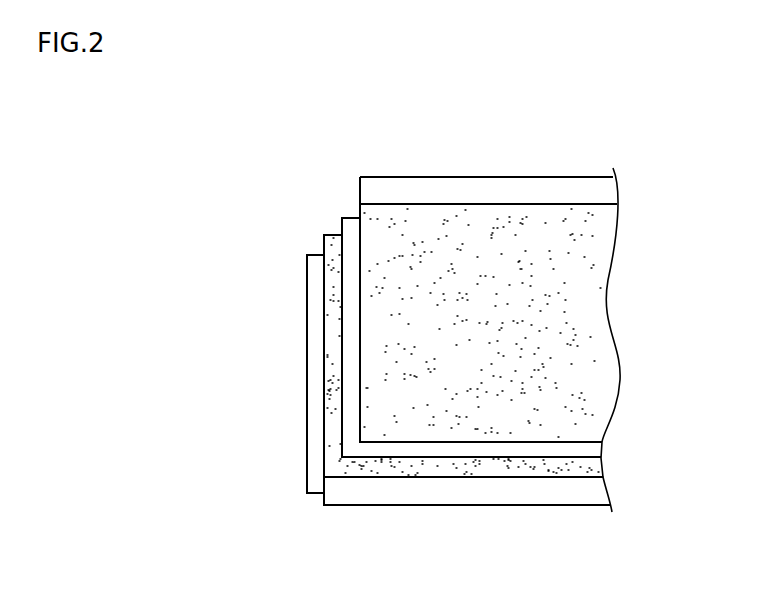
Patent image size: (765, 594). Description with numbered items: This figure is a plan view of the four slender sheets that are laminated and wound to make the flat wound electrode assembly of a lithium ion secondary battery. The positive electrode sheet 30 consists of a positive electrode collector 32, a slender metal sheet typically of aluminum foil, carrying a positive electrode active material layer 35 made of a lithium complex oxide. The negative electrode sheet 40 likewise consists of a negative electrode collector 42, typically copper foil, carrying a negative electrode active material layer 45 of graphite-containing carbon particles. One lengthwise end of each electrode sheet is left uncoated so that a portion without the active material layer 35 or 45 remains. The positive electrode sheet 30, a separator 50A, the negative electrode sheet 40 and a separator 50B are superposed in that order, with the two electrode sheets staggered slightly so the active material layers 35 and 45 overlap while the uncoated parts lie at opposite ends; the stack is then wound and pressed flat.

The positive electrode sheet 30 is at (490, 297).
The positive electrode collector 32 is at (585, 185).
The positive electrode active material layer 35 is at (403, 222).
The negative electrode sheet 40 is at (467, 407).
The negative electrode collector 42 is at (383, 492).
The negative electrode active material layer 45 is at (533, 470).
The separator 50A is at (350, 218).
The separator 50B is at (313, 255).